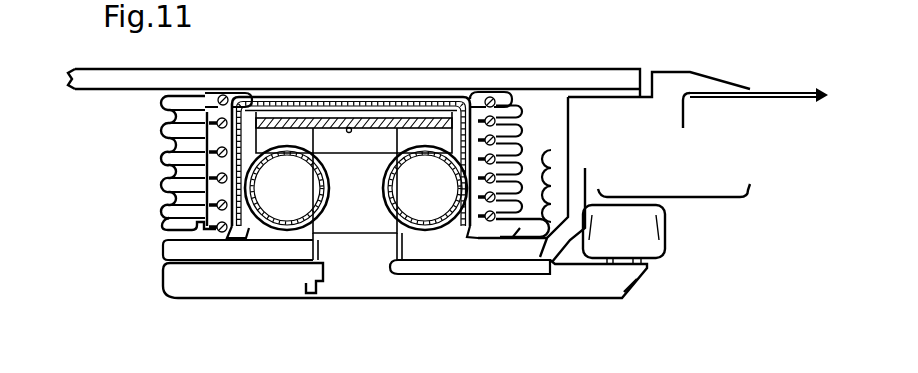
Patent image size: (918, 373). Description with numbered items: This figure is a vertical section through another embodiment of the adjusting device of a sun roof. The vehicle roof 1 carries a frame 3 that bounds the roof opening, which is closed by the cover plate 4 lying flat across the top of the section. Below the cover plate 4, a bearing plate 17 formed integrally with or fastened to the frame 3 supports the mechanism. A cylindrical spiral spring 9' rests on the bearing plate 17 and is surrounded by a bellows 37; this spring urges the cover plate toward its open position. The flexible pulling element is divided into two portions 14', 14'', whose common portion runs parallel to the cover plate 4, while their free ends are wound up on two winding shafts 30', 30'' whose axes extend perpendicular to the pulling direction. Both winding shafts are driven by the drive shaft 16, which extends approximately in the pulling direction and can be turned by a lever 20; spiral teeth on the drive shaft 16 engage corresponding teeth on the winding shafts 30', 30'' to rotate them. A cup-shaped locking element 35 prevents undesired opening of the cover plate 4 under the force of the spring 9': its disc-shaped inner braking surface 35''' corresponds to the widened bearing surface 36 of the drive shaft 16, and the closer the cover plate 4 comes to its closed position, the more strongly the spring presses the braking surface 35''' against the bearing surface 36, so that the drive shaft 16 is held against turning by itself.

The vehicle roof 1 is at (778, 92).
The frame 3 is at (677, 83).
The cover plate 4 is at (569, 82).
The cylindrical spiral spring 9' is at (177, 180).
The pulling portion 14' is at (362, 137).
The pulling portion 14'' is at (472, 77).
The drive shaft 16 is at (362, 228).
The bearing plate 17 is at (498, 252).
The lever 20 is at (571, 320).
The winding shaft 30' is at (281, 240).
The winding shaft 30'' is at (425, 247).
The locking element 35 is at (172, 163).
The inner braking surface 35''' is at (351, 84).
The bearing surface 36 is at (300, 127).
The bellows 37 is at (163, 188).